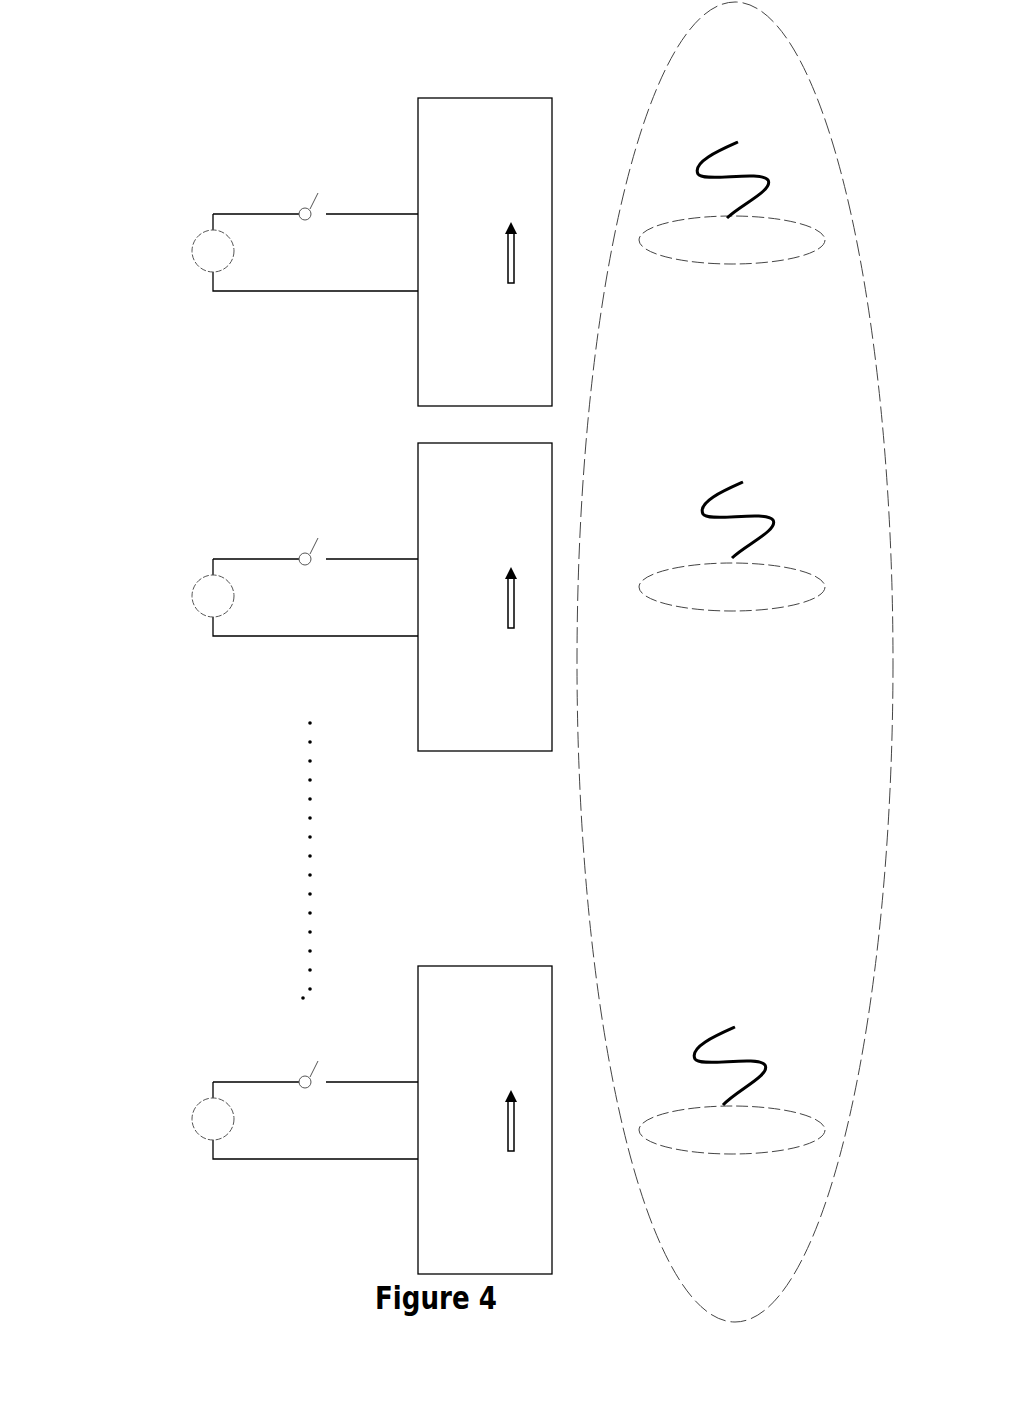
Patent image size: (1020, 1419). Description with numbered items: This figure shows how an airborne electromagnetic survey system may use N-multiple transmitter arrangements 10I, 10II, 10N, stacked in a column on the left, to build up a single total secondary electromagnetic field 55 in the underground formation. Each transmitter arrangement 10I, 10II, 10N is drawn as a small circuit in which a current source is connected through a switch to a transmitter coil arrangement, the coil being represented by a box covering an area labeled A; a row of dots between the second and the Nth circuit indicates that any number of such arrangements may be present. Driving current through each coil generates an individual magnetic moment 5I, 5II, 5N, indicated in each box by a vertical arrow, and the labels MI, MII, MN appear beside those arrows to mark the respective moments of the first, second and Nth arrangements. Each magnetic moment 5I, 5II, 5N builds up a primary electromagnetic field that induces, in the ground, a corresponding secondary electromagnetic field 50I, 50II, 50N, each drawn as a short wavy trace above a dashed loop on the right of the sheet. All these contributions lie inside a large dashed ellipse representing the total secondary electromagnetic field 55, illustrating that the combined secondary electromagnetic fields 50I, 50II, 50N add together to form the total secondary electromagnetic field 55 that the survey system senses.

The first transmitter arrangement 10I is at (240, 180).
The second transmitter arrangement 10II is at (237, 525).
The Nth transmitter arrangement 10N is at (252, 1021).
The first magnetic moment 5I is at (533, 312).
The second magnetic moment 5II is at (533, 657).
The Nth magnetic moment 5N is at (540, 1189).
The first magnetization direction MI is at (509, 270).
The second magnetization direction MII is at (510, 615).
The Nth magnetization direction MN is at (509, 1138).
The first secondary electromagnetic field 50I is at (732, 190).
The second secondary electromagnetic field 50II is at (732, 532).
The Nth secondary electromagnetic field 50N is at (732, 1076).
The total secondary electromagnetic field 55 is at (890, 725).